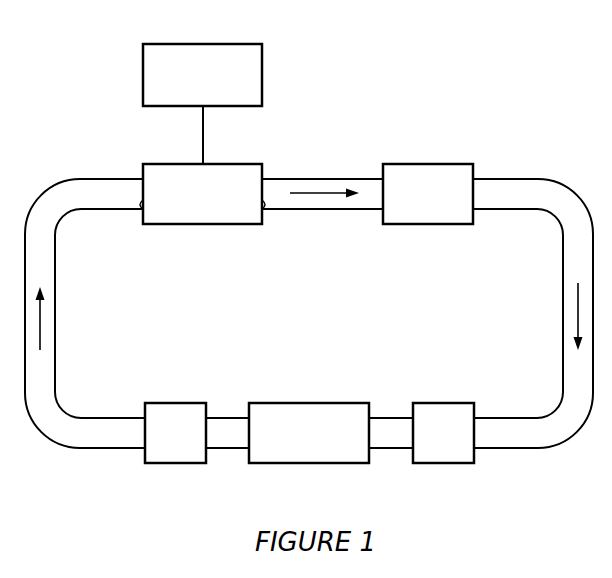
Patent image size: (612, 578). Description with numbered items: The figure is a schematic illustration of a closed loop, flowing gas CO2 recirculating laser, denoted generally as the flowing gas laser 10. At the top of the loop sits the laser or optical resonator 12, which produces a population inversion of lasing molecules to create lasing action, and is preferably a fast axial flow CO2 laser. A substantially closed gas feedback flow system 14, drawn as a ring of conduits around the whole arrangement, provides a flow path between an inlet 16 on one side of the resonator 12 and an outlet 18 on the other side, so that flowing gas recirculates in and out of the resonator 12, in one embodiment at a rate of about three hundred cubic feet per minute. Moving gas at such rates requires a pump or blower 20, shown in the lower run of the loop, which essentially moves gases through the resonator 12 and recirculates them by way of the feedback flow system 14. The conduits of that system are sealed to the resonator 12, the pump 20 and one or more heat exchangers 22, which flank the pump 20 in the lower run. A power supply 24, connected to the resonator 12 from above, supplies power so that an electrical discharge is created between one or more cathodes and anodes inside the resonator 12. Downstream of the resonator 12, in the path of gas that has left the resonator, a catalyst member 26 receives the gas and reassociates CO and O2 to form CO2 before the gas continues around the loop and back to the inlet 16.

The flowing gas CO2 laser 10 is at (334, 115).
The optical resonator 12 is at (262, 164).
The gas feedback flow system 14 is at (561, 200).
The inlet 16 is at (143, 206).
The outlet 18 is at (262, 206).
The pump 20 is at (369, 463).
The heat exchanger 22 is at (206, 463).
The power supply 24 is at (262, 44).
The catalyst member 26 is at (473, 164).